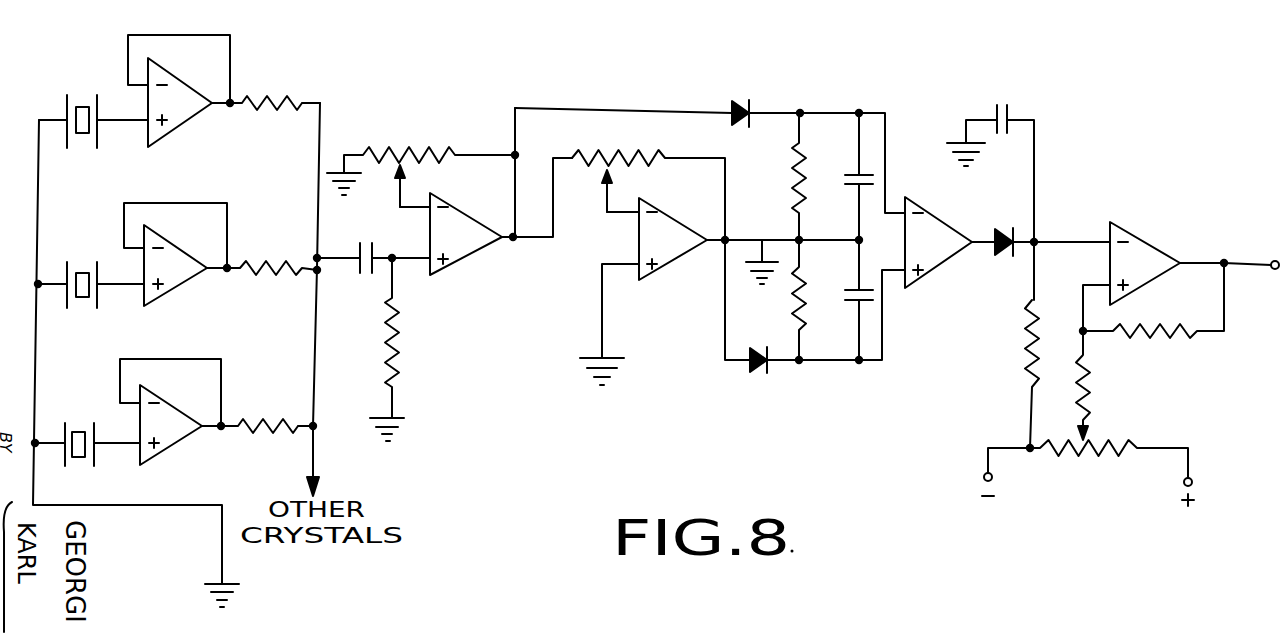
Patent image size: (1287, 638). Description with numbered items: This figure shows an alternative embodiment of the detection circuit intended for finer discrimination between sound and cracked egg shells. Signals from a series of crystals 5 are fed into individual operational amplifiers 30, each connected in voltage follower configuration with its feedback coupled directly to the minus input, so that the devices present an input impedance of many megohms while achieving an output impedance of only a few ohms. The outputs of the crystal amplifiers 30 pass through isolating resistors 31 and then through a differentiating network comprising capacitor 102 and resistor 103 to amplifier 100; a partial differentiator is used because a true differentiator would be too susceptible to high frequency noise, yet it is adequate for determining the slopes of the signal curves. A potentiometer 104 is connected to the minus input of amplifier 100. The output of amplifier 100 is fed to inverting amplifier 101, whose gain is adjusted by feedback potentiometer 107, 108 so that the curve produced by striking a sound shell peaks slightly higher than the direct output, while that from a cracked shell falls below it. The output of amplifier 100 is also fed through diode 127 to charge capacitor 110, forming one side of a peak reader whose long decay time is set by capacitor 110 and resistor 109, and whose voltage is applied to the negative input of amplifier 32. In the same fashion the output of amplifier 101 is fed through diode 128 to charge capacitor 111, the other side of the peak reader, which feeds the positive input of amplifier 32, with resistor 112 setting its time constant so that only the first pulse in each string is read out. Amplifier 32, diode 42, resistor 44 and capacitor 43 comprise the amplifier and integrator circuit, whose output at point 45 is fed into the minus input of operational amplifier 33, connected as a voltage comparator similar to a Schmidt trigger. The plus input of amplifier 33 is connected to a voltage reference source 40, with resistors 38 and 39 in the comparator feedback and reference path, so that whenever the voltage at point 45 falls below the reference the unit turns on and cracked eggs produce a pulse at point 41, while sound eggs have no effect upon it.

The crystal 5 is at (83, 93).
The operational amplifier 30 is at (182, 125).
The isolating resistor 31 is at (272, 120).
The amplifier 100 is at (462, 258).
The inverting amplifier 101 is at (671, 262).
The capacitor 102 is at (369, 280).
The resistor 103 is at (396, 345).
The potentiometer 104 is at (398, 148).
The feedback potentiometer 107 is at (590, 152).
The feedback potentiometer 108 is at (637, 154).
The resistor 109 is at (794, 186).
The capacitor 110 is at (843, 176).
The capacitor 111 is at (841, 291).
The resistor 112 is at (791, 300).
The diode 127 is at (741, 100).
The diode 128 is at (757, 373).
The amplifier 32 is at (938, 269).
The operational amplifier 33 is at (1148, 240).
The resistor 38 is at (1157, 340).
The resistor 39 is at (1088, 390).
The voltage reference source 40 is at (1102, 459).
The output point 41 is at (1275, 270).
The diode 42 is at (1004, 228).
The capacitor 43 is at (1004, 100).
The resistor 44 is at (1025, 346).
The integrator output point 45 is at (1066, 240).